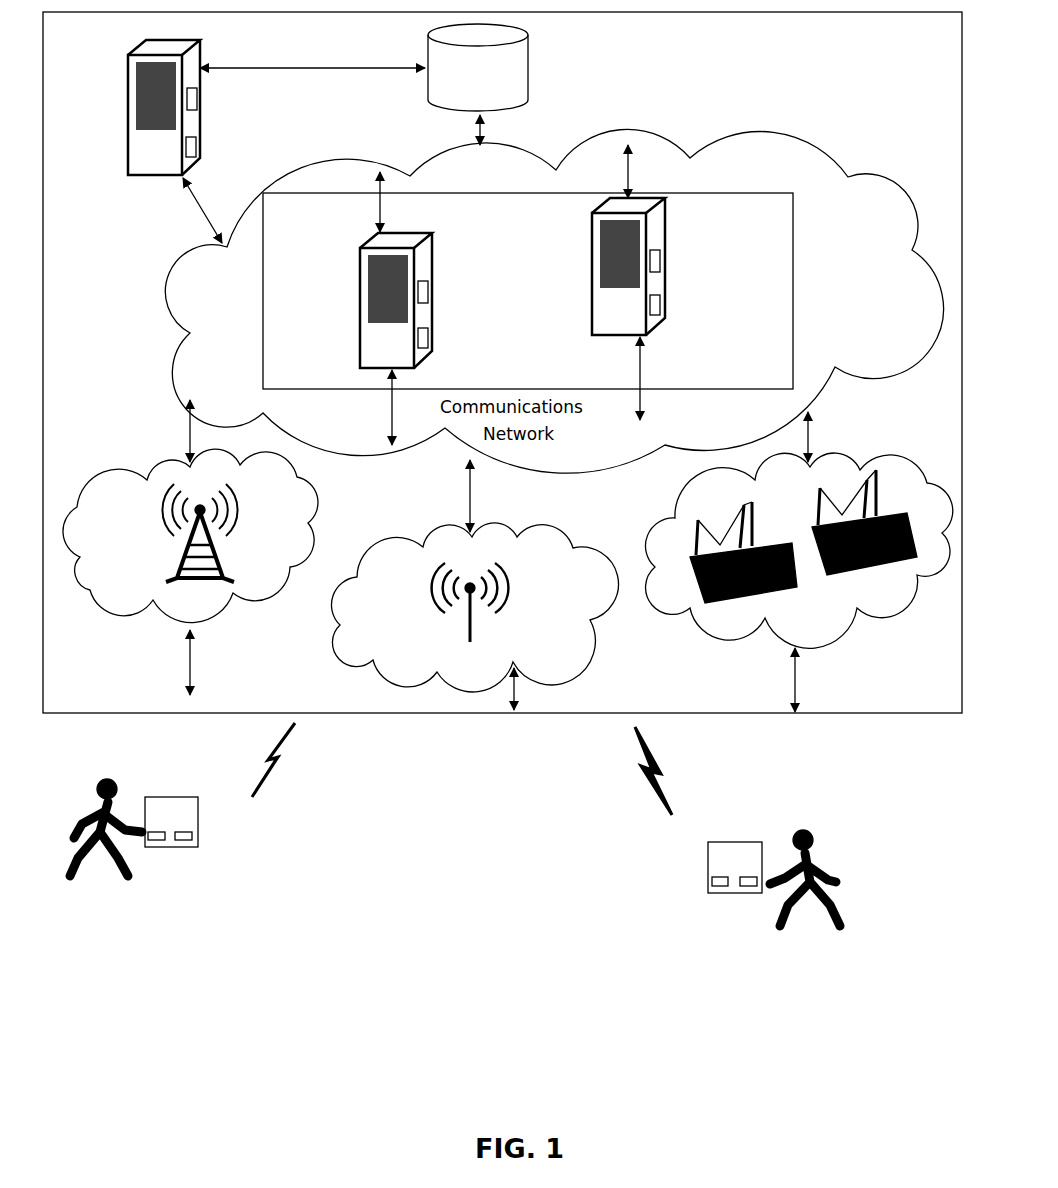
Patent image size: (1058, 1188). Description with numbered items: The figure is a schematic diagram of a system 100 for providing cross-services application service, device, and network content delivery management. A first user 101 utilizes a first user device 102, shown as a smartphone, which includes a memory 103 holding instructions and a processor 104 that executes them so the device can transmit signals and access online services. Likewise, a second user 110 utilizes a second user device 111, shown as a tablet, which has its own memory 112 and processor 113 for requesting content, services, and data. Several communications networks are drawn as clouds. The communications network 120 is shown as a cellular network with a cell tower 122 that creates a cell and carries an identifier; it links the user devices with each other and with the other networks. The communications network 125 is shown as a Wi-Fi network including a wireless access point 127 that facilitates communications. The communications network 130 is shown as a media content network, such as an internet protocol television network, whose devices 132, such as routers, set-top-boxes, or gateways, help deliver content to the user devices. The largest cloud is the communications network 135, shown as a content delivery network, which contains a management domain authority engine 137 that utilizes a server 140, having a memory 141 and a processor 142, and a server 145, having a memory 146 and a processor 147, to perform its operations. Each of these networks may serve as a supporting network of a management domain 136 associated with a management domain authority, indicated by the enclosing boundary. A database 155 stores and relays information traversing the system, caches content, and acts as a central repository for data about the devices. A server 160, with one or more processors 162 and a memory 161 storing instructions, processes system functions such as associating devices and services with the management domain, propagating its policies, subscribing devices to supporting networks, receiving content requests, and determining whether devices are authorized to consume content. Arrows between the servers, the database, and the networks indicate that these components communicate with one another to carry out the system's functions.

The system 100 is at (490, 892).
The first user 101 is at (72, 882).
The first user device 102 is at (198, 820).
The memory 103 is at (155, 842).
The processor 104 is at (183, 842).
The second user 110 is at (838, 934).
The second user device 111 is at (708, 869).
The memory 112 is at (720, 893).
The processor 113 is at (748, 893).
The communications network 120 is at (115, 610).
The cell tower 122 is at (195, 562).
The communications network 125 is at (475, 690).
The wireless access point 127 is at (477, 628).
The communications network 130 is at (887, 622).
The device 132 is at (890, 497).
The communications network 135 is at (155, 290).
The management domain 136 is at (933, 713).
The management domain authority engine 137 is at (795, 264).
The server 140 is at (360, 272).
The memory 141 is at (428, 292).
The processor 142 is at (428, 338).
The server 145 is at (592, 227).
The memory 146 is at (665, 262).
The processor 147 is at (665, 307).
The database 155 is at (478, 67).
The server 160 is at (128, 78).
The memory 161 is at (200, 145).
The processor 162 is at (200, 98).